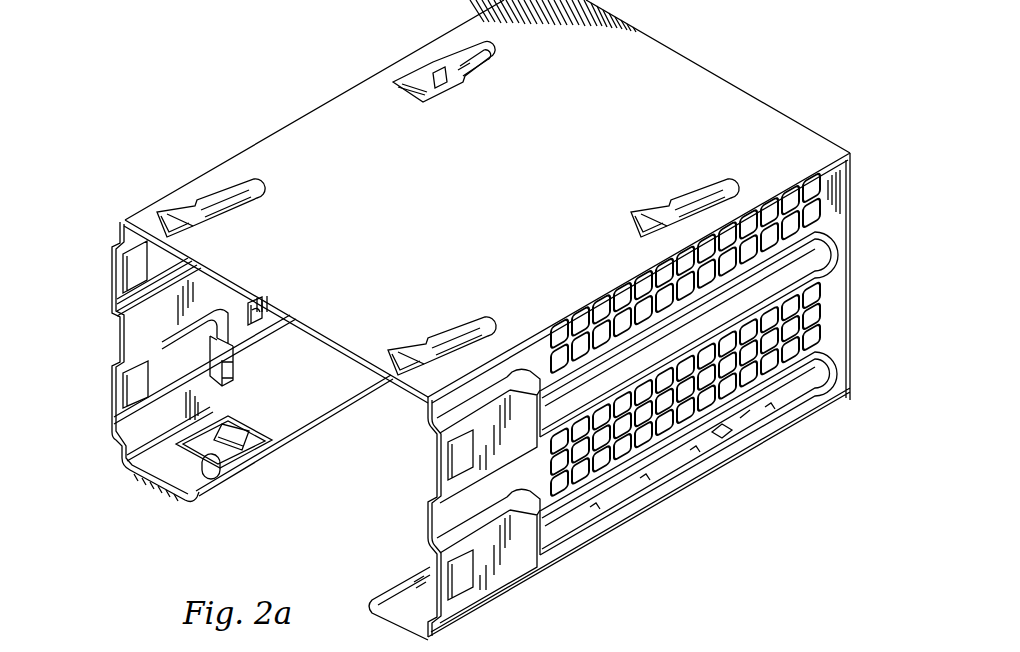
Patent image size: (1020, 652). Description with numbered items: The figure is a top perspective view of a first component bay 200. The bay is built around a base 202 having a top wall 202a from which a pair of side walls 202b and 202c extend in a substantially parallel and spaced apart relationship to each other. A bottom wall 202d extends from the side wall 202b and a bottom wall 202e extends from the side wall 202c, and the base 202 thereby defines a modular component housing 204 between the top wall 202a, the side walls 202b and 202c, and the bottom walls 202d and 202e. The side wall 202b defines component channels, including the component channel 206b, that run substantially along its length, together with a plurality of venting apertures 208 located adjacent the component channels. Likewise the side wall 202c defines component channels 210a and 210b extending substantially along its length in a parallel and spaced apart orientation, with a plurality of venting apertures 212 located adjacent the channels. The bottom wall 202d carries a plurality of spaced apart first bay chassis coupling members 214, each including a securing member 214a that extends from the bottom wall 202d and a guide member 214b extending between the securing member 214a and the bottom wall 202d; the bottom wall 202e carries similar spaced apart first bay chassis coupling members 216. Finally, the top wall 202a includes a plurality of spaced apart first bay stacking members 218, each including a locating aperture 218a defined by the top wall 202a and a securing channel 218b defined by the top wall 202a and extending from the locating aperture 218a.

The first component bay 200 is at (345, 58).
The base 202 is at (100, 396).
The top wall 202a is at (495, 210).
The side wall 202b is at (114, 266).
The side wall 202c is at (426, 506).
The bottom wall 202d is at (150, 480).
The bottom wall 202e is at (378, 600).
The modular component housing 204 is at (305, 540).
The component channel 206b is at (240, 347).
The venting apertures 208 is at (262, 306).
The component channel 210a is at (840, 262).
The component channel 210b is at (840, 378).
The venting apertures 212 is at (605, 318).
The first bay chassis coupling member 214 is at (254, 462).
The securing member 214a is at (213, 470).
The guide member 214b is at (258, 425).
The first bay chassis coupling member 216 is at (738, 426).
The first bay stacking member 218 is at (497, 70).
The locating aperture 218a is at (428, 98).
The securing channel 218b is at (495, 50).